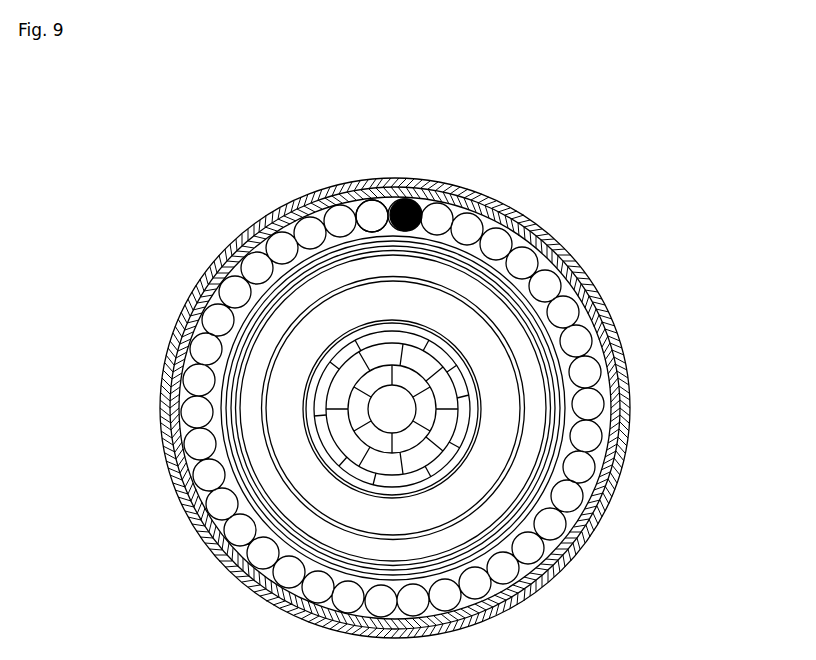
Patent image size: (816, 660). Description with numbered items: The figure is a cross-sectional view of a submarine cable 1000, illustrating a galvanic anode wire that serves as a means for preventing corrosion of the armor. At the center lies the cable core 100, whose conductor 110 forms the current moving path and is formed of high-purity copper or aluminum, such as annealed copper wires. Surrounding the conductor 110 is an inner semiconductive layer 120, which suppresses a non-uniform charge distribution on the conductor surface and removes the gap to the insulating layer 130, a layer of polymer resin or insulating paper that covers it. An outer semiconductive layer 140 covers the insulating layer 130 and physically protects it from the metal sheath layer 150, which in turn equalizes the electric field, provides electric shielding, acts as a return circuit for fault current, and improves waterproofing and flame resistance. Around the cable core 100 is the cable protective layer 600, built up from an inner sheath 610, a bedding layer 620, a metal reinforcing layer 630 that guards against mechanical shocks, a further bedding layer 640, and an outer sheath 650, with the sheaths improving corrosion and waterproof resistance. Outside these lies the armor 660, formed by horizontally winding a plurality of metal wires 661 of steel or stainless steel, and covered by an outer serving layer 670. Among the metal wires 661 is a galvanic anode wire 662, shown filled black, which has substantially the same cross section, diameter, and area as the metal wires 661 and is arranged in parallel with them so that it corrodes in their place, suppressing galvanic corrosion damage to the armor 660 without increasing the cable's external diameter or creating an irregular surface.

The submarine cable 1000 is at (544, 185).
The cable core 100 is at (688, 355).
The conductor 110 is at (461, 386).
The inner semiconductive layer 120 is at (477, 412).
The insulating layer 130 is at (493, 440).
The outer semiconductive layer 140 is at (507, 470).
The metal sheath layer 150 is at (503, 497).
The cable protective layer 600 is at (92, 263).
The inner sheath 610 is at (238, 423).
The bedding layer 620 is at (232, 400).
The metal reinforcing layer 630 is at (230, 378).
The bedding layer 640 is at (233, 343).
The outer sheath 650 is at (240, 320).
The armor 660 is at (368, 108).
The metal wire 661 is at (375, 211).
The galvanic anode wire 662 is at (409, 200).
The outer serving layer 670 is at (220, 268).